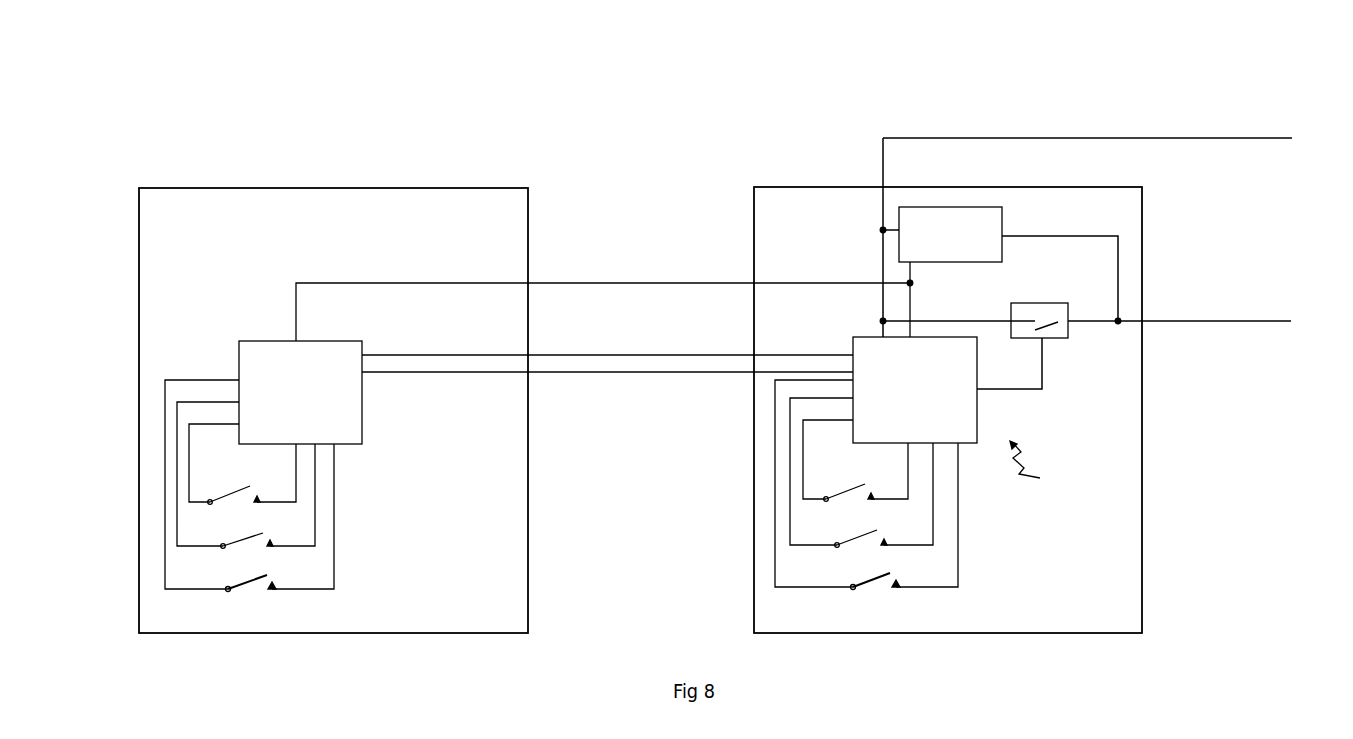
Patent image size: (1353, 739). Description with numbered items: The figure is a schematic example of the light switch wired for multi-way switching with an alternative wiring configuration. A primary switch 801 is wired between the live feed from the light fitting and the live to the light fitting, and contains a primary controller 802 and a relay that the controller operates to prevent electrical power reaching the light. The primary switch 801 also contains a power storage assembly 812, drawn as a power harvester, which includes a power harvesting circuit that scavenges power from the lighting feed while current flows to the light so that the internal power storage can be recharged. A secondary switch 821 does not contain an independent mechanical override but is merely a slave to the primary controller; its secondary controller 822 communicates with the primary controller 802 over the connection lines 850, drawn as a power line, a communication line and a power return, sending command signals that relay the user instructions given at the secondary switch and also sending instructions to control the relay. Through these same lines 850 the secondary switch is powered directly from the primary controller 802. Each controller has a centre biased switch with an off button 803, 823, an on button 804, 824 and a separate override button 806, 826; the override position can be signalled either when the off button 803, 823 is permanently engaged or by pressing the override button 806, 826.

The primary switch 801 is at (795, 168).
The primary controller 802 is at (877, 355).
The off button 803 is at (862, 490).
The on button 804 is at (860, 540).
The override button 806 is at (865, 592).
The power storage assembly 812 is at (948, 207).
The secondary switch 821 is at (210, 165).
The secondary controller 822 is at (253, 368).
The off button 823 is at (237, 507).
The on button 824 is at (237, 548).
The override button 826 is at (253, 593).
The connection lines 850 is at (603, 330).